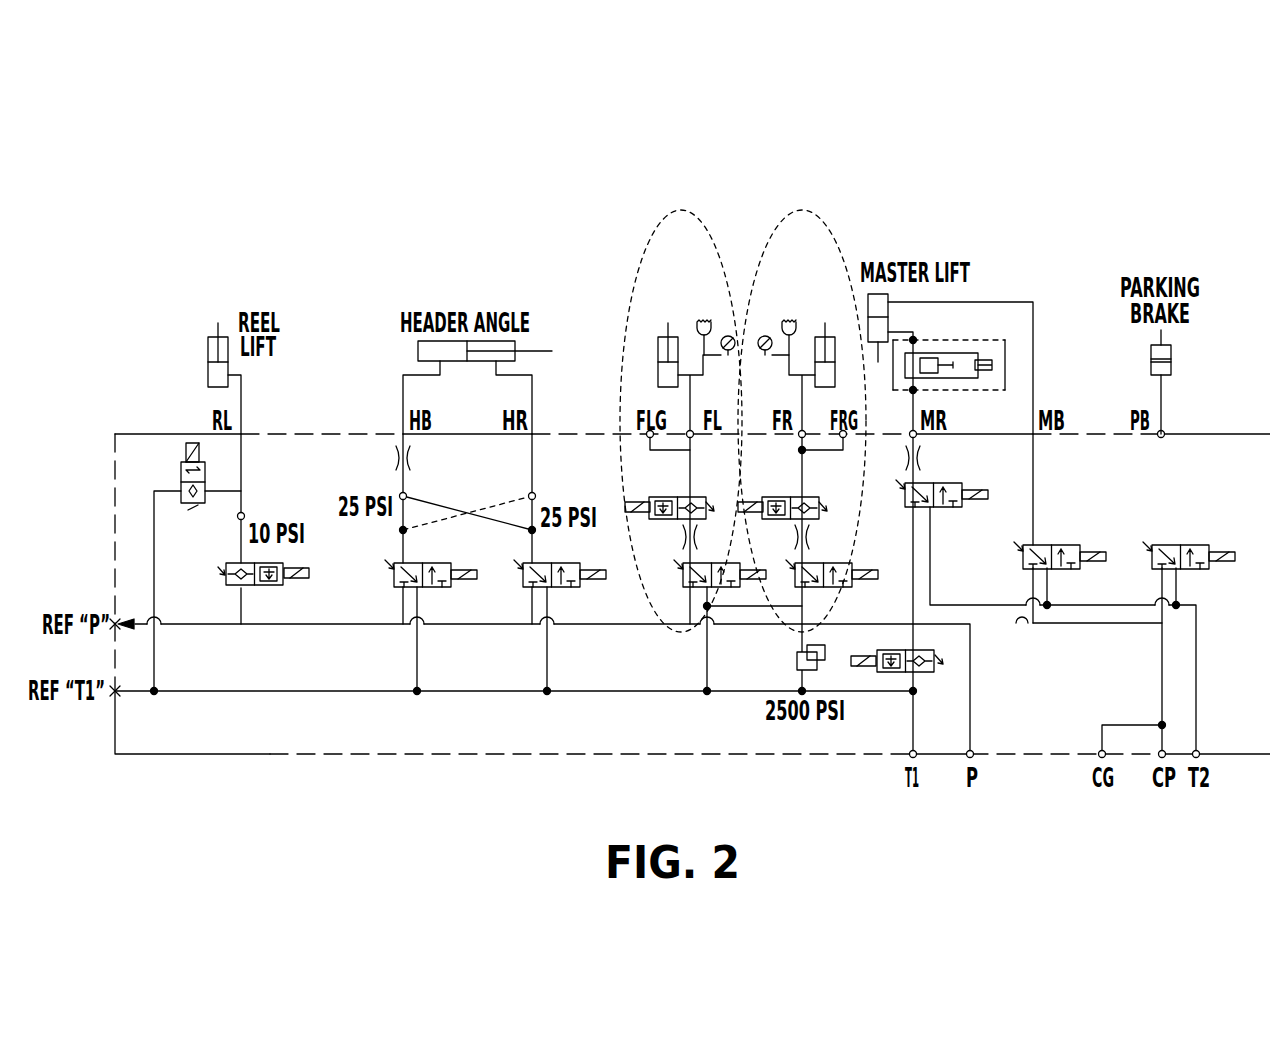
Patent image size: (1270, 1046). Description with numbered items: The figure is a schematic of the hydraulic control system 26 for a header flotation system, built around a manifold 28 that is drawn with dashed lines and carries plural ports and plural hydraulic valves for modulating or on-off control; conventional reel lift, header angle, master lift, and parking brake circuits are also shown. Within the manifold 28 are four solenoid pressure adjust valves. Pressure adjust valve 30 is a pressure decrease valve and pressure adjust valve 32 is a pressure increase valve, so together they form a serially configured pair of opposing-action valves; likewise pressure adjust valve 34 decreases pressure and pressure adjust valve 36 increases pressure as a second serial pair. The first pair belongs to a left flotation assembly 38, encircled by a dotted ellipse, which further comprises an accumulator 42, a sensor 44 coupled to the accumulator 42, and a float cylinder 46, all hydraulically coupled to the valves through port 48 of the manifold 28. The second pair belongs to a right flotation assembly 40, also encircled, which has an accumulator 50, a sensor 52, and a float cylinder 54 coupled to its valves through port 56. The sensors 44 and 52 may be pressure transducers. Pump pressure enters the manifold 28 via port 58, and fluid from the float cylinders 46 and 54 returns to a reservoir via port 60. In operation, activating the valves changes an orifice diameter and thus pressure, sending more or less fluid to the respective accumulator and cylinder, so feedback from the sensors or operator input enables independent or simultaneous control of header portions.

The hydraulic control system 26 is at (283, 128).
The manifold 28 is at (140, 434).
The pressure adjust valve 30 is at (655, 497).
The pressure adjust valve 32 is at (710, 588).
The pressure adjust valve 34 is at (822, 518).
The pressure adjust valve 36 is at (795, 575).
The left flotation assembly 38 is at (688, 212).
The right flotation assembly 40 is at (800, 212).
The accumulator 42 is at (721, 340).
The sensor 44 is at (700, 324).
The float cylinder 46 is at (662, 350).
The port 48 is at (688, 431).
The accumulator 50 is at (792, 323).
The sensor 52 is at (763, 338).
The float cylinder 54 is at (827, 335).
The port 56 is at (804, 433).
The port 58 is at (975, 757).
The port 60 is at (920, 757).